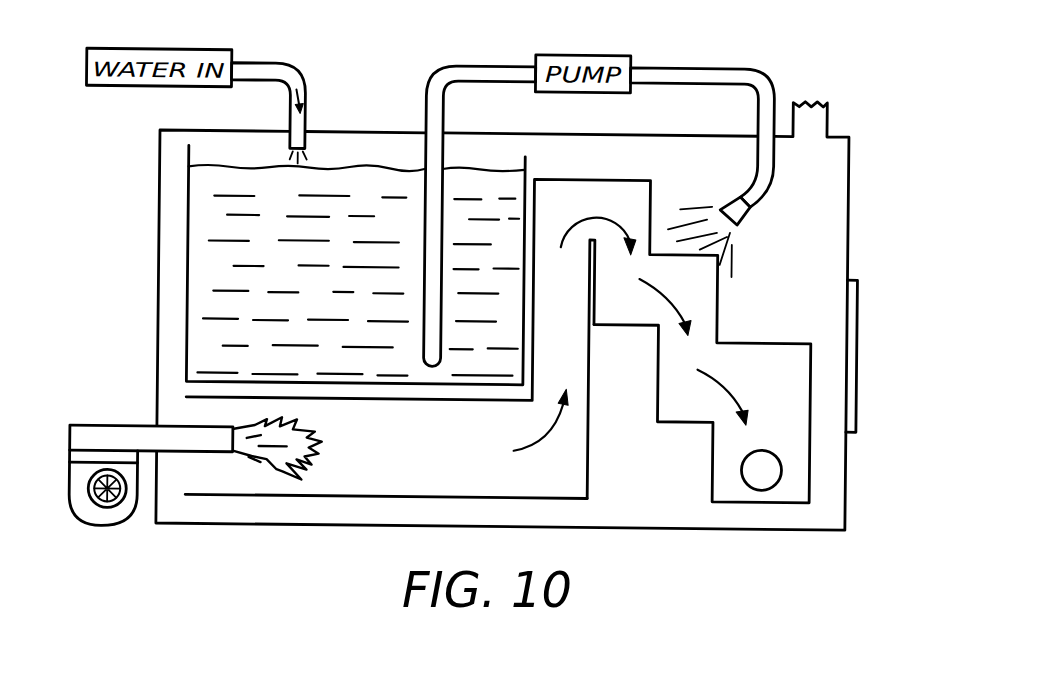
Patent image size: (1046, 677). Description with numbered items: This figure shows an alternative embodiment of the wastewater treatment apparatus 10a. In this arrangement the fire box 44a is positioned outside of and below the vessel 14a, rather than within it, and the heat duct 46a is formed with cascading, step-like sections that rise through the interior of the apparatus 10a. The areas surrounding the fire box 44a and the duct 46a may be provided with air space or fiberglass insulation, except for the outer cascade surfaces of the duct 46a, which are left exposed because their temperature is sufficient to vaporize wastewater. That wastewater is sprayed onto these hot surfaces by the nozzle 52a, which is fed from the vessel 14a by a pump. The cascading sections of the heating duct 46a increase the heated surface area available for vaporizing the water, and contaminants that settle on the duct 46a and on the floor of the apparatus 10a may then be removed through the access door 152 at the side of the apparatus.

The apparatus 10a is at (852, 104).
The vessel 14a is at (197, 300).
The fire box 44a is at (574, 450).
The heat duct 46a is at (761, 362).
The nozzle 52a is at (748, 216).
The access door 152 is at (857, 392).